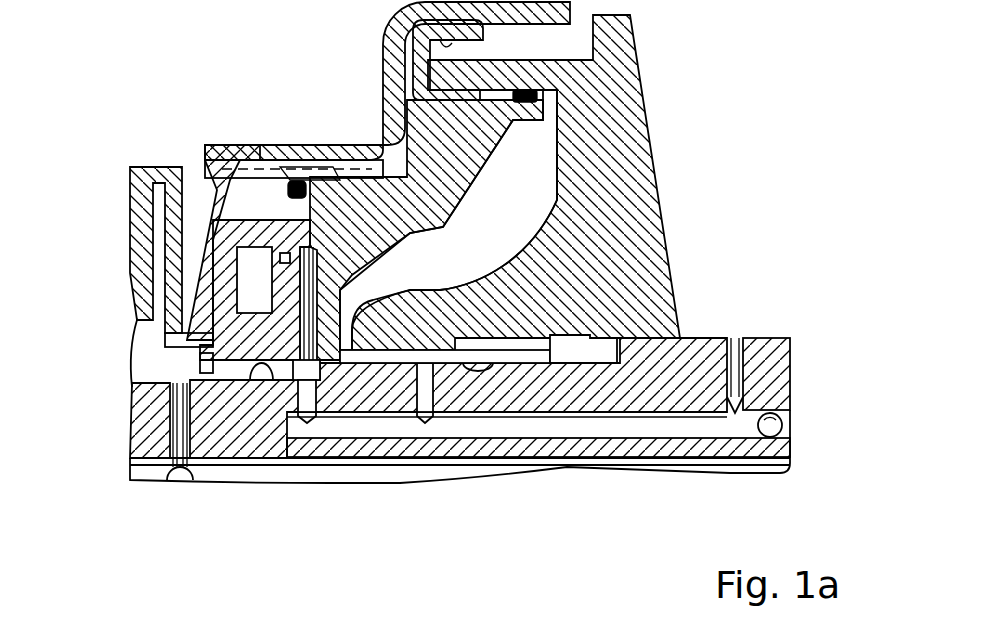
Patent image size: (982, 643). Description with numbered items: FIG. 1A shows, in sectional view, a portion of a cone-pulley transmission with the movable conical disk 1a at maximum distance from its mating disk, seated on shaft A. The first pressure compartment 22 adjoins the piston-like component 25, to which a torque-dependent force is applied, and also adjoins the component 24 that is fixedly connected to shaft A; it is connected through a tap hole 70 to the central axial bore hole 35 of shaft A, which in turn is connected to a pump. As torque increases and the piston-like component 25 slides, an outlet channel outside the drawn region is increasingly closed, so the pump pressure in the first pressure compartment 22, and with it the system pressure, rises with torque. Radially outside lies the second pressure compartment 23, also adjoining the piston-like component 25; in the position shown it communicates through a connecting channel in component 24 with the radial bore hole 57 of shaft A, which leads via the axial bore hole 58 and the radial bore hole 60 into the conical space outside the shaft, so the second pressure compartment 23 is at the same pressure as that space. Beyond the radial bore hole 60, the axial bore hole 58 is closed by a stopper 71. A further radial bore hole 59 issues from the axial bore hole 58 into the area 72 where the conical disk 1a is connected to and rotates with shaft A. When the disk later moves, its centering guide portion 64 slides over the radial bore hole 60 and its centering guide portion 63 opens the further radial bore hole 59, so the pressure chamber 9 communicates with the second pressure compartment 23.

The conical disk 1a is at (627, 170).
The pressure chamber 9 is at (530, 186).
The first pressure compartment 22 is at (177, 367).
The second pressure compartment 23 is at (362, 192).
The component 24 is at (397, 113).
The piston-like component 25 is at (213, 307).
The central axial bore hole 35 is at (293, 473).
The radial bore hole 57 is at (317, 403).
The axial bore hole 58 is at (607, 427).
The further radial bore hole 59 is at (430, 400).
The radial bore hole 60 is at (740, 393).
The centering guide portion 63 is at (370, 352).
The centering guide portion 64 is at (657, 323).
The tap hole 70 is at (185, 430).
The stopper 71 is at (768, 424).
The area 72 is at (517, 357).
The shaft A is at (777, 377).